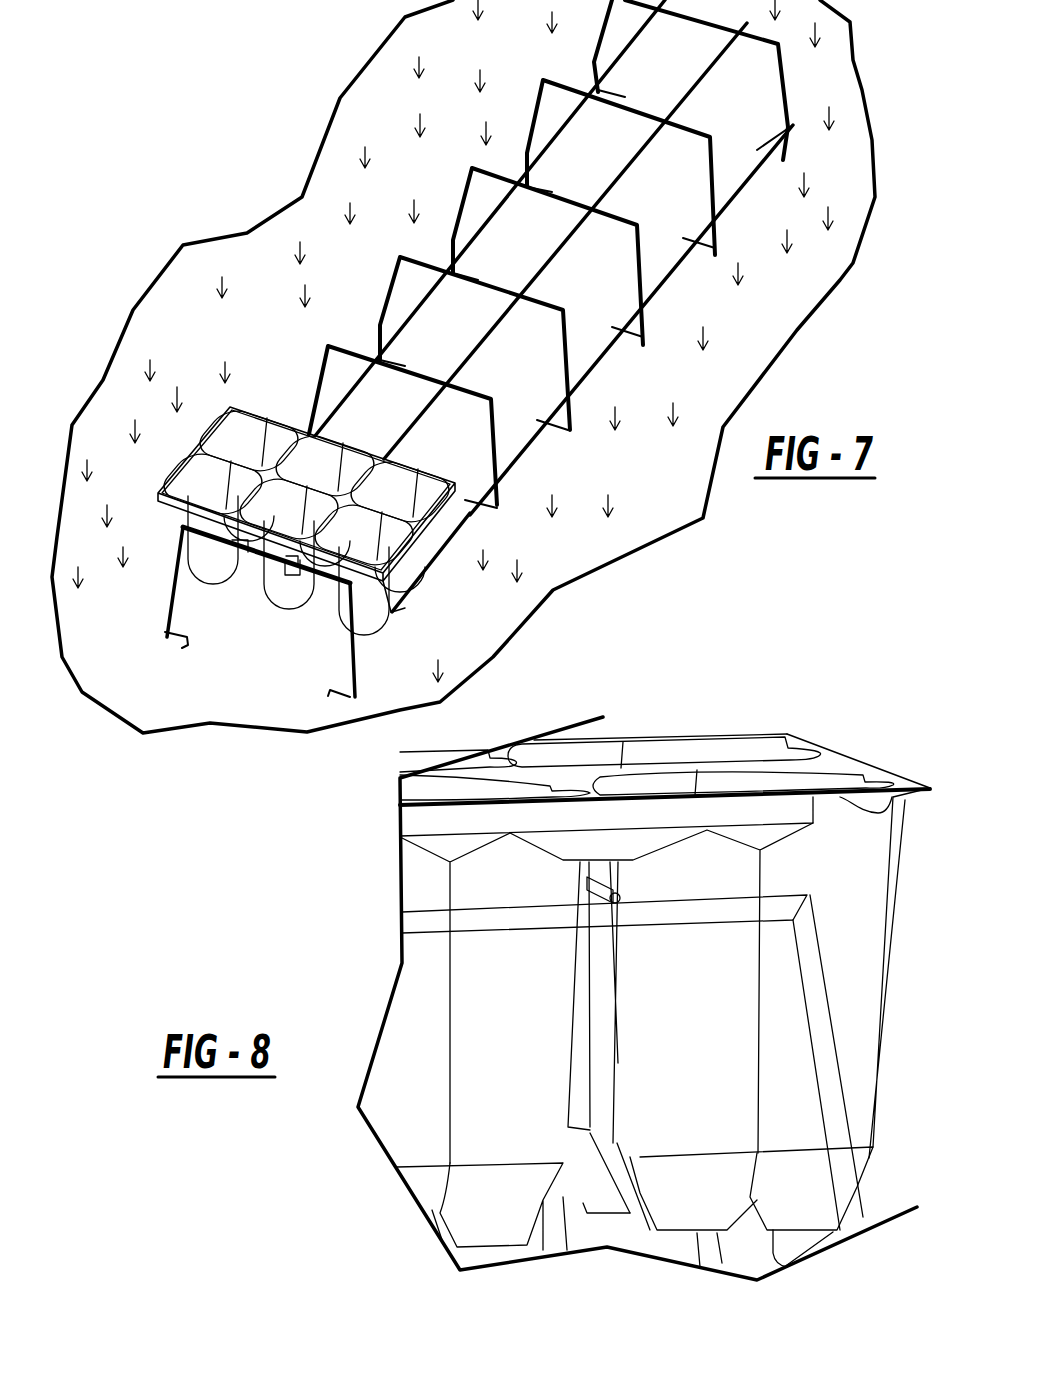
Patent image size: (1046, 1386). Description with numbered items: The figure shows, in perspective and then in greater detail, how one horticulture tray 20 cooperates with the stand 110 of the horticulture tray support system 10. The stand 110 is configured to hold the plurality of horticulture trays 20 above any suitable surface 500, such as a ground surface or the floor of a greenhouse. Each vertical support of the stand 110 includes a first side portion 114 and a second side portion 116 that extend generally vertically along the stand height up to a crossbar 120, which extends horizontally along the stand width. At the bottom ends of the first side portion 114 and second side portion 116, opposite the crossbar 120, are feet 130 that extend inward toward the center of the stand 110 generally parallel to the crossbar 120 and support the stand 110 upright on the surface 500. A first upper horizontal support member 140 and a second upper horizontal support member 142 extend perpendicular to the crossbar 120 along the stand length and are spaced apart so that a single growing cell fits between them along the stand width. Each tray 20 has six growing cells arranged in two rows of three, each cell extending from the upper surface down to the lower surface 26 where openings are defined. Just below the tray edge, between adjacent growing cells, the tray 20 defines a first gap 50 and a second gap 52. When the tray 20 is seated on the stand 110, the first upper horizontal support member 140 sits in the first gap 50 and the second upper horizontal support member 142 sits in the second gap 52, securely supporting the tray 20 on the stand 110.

In FIG. 7, the horticulture tray support system 10 is at (155, 168).
In FIG. 7, the horticulture tray 20 is at (232, 406).
In FIG. 8, the horticulture tray 20 is at (817, 755).
In FIG. 8, the lower surface 26 is at (787, 1267).
In FIG. 7, the first gap 50 is at (226, 552).
In FIG. 7, the second gap 52 is at (295, 567).
In FIG. 8, the second gap 52 is at (590, 878).
In FIG. 7, the stand 110 is at (395, 257).
In FIG. 8, the first side portion 114 is at (823, 1040).
In FIG. 8, the second side portion 116 is at (835, 1105).
In FIG. 8, the crossbar 120 is at (433, 927).
In FIG. 7, the feet 130 is at (187, 640).
In FIG. 7, the first upper horizontal support member 140 is at (240, 548).
In FIG. 7, the second upper horizontal support member 142 is at (292, 560).
In FIG. 8, the second upper horizontal support member 142 is at (598, 892).
In FIG. 7, the surface 500 is at (313, 168).